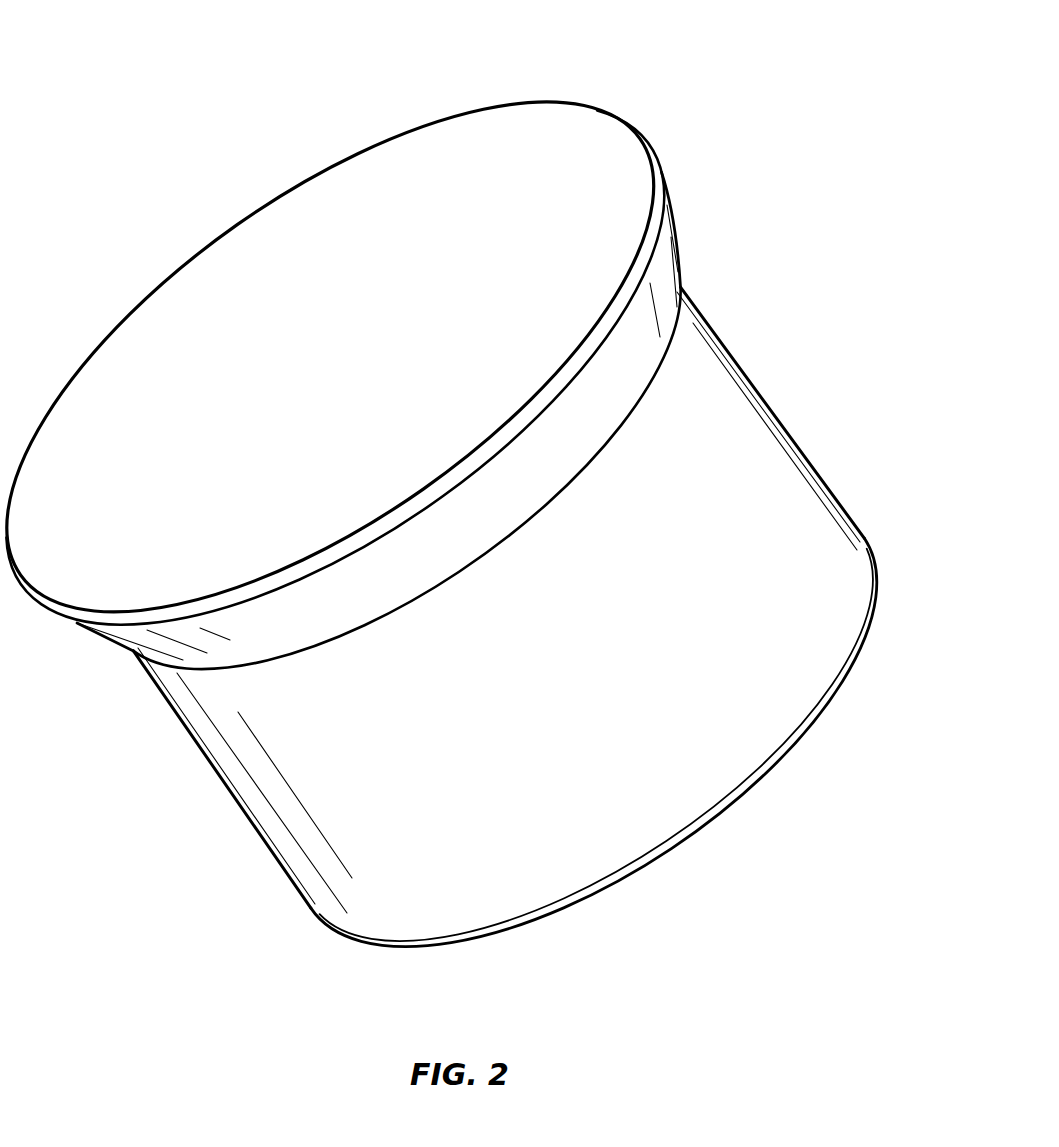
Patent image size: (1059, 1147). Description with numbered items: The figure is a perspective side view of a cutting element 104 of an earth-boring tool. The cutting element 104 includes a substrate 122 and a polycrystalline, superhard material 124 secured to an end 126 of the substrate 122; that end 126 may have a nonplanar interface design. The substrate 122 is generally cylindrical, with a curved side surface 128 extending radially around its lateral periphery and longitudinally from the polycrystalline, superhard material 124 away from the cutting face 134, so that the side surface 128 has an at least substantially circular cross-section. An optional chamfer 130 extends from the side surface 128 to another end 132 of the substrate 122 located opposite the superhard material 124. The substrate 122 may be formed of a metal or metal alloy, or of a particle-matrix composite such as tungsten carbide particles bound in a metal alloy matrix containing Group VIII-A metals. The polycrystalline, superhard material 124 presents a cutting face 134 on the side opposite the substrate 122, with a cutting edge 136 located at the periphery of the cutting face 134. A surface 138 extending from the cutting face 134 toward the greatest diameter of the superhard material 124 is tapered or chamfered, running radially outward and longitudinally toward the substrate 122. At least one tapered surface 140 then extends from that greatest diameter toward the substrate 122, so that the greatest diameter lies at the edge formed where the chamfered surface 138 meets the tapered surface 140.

The cutting element 104 is at (183, 169).
The substrate 122 is at (718, 407).
The polycrystalline, superhard material 124 is at (178, 648).
The end of the substrate 126 is at (659, 370).
The curved side surface 128 is at (344, 752).
The chamfer 130 is at (793, 750).
The other end of the substrate 132 is at (646, 875).
The cutting face 134 is at (459, 262).
The cutting edge 136 is at (622, 118).
The chamfered surface 138 is at (660, 219).
The tapered surface 140 is at (546, 465).